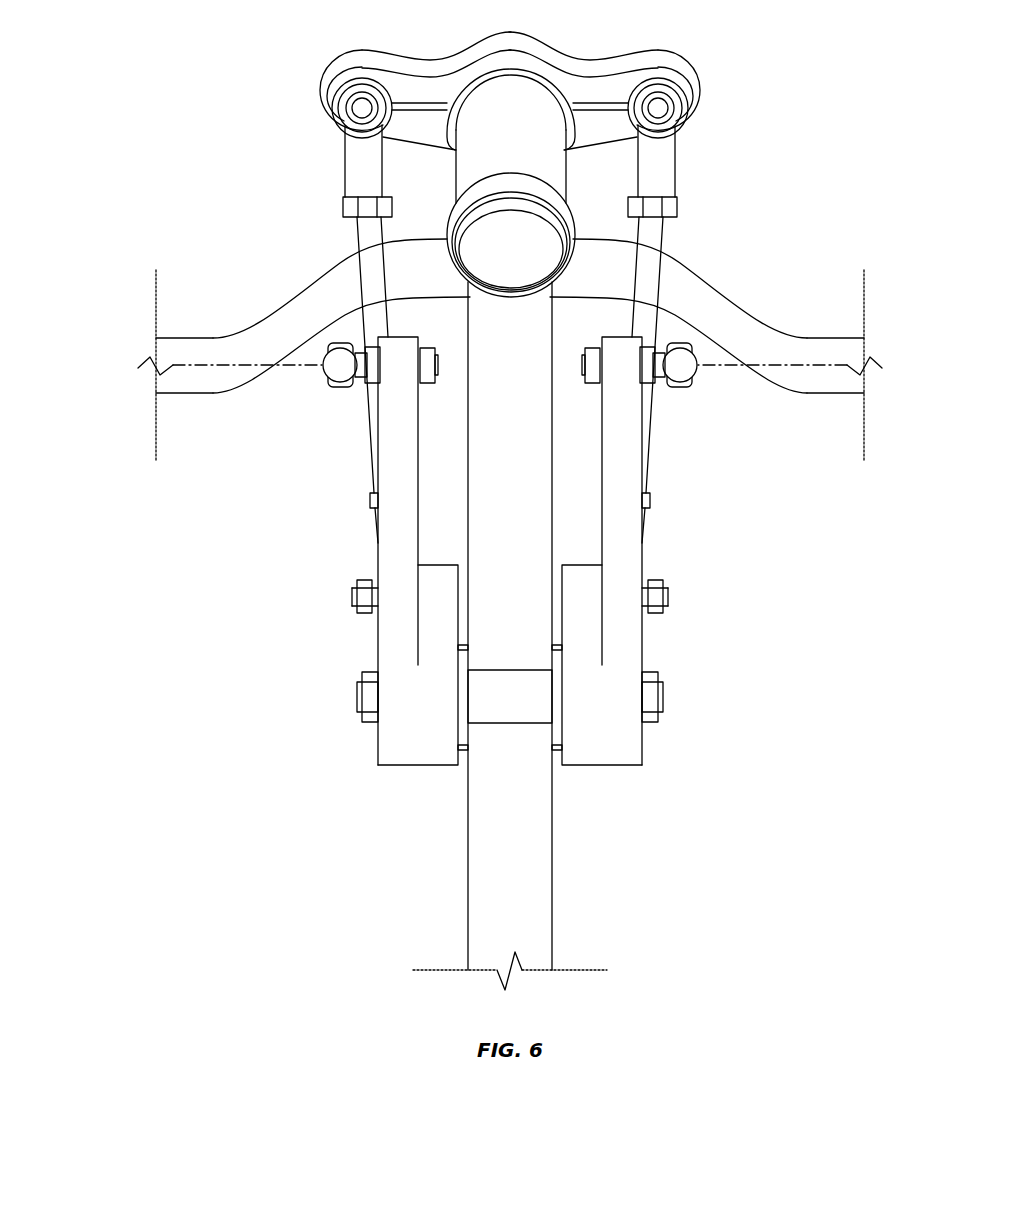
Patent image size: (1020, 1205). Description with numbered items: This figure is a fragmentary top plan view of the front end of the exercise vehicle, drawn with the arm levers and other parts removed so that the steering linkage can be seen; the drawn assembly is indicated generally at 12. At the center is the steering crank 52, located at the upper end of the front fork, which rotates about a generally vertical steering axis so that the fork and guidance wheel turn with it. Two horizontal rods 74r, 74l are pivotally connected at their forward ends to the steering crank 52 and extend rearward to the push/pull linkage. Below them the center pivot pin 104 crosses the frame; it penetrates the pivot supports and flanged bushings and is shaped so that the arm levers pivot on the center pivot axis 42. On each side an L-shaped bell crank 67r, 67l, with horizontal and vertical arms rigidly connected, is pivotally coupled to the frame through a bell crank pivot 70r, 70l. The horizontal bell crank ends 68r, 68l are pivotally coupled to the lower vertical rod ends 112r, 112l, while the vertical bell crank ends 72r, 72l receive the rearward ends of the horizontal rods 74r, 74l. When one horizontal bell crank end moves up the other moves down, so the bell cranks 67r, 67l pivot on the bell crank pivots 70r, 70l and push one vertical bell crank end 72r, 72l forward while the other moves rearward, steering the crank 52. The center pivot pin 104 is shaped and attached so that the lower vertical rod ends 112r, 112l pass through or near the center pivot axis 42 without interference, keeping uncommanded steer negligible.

The post assembly 12 is at (220, 553).
The center pivot axis 42 is at (213, 363).
The steering crank 52 is at (700, 88).
The left bell crank 67l is at (418, 766).
The right bell crank 67r is at (602, 766).
The left horizontal bell crank end 68l is at (438, 365).
The right horizontal bell crank end 68r is at (585, 365).
The left bell crank pivot 70l is at (357, 697).
The right bell crank pivot 70r is at (663, 697).
The left vertical bell crank end 72l is at (352, 597).
The right vertical bell crank end 72r is at (668, 597).
The left horizontal rod 74l is at (356, 242).
The right horizontal rod 74r is at (665, 242).
The center pivot pin 104 is at (283, 300).
The left lower vertical rod end 112l is at (326, 376).
The right lower vertical rod end 112r is at (694, 376).